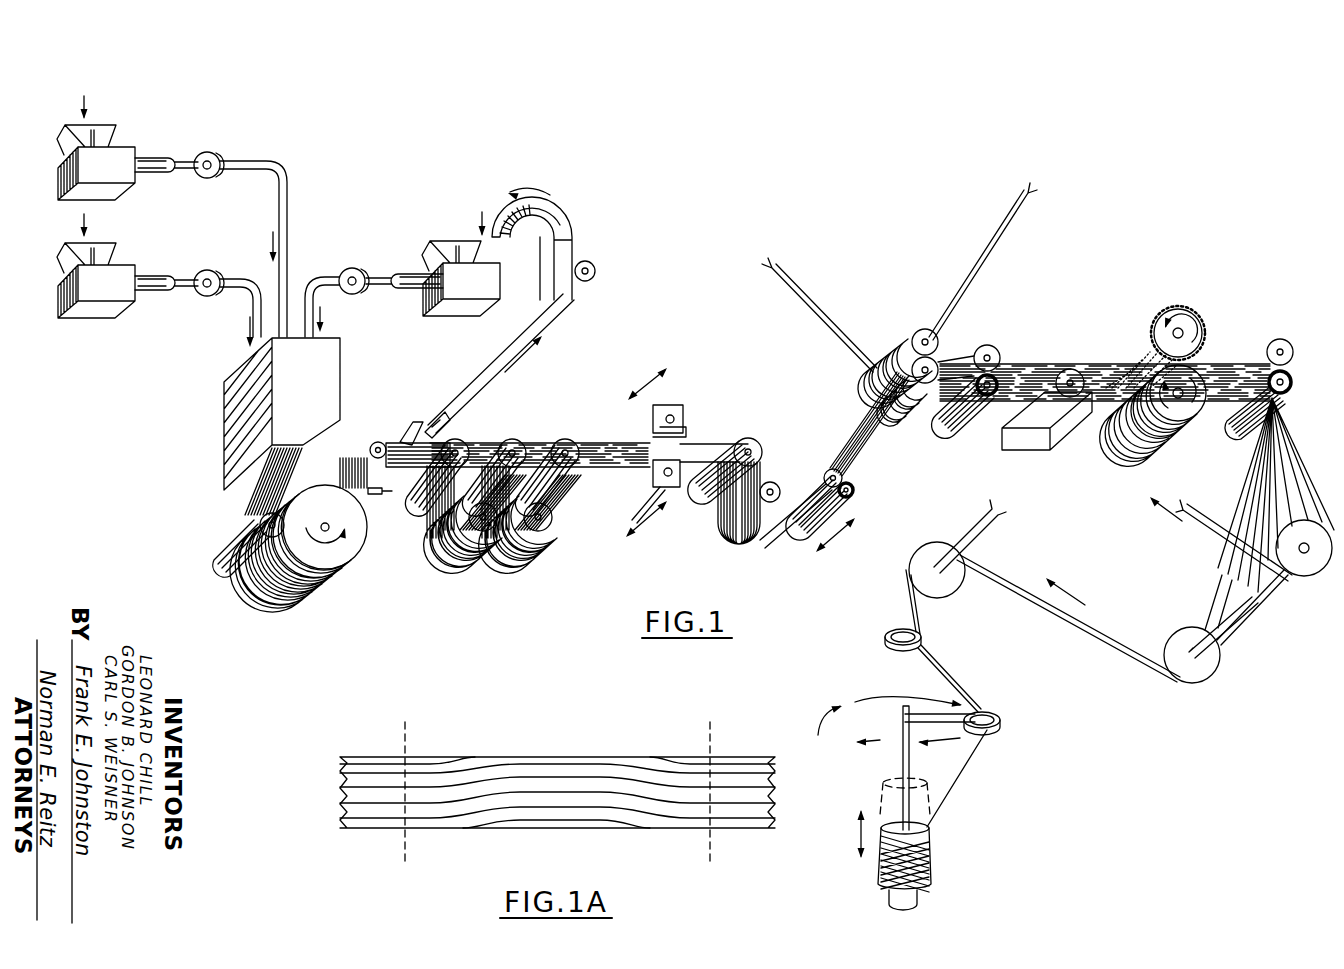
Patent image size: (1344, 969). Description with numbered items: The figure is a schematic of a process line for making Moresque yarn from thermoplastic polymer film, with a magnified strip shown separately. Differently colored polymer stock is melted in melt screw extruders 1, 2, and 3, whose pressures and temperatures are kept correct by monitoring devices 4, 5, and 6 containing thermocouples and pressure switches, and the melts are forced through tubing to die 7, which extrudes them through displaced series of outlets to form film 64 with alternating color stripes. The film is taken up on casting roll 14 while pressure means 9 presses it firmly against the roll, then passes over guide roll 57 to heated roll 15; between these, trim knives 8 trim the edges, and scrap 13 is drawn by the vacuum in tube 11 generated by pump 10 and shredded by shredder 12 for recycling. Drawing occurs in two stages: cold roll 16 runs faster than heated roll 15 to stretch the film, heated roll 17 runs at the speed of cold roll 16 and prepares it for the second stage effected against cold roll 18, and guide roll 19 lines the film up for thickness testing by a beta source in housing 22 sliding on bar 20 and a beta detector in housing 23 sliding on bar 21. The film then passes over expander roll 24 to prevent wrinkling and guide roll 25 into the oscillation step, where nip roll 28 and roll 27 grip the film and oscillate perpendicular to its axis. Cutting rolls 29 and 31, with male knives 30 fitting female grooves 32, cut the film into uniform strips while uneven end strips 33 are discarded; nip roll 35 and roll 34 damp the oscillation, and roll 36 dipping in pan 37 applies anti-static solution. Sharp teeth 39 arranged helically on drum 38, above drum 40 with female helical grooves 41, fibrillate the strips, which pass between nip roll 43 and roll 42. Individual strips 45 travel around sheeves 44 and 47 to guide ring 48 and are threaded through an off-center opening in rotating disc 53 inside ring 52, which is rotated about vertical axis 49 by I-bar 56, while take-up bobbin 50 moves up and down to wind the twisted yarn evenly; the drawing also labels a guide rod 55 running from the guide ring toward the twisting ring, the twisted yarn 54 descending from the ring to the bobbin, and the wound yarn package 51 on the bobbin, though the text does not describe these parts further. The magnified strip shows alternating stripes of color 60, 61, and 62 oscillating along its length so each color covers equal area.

In FIG. 1, the melt screw extruder 1 is at (127, 148).
In FIG. 1, the melt screw extruder 2 is at (127, 266).
In FIG. 1, the melt screw extruder 3 is at (433, 264).
In FIG. 1, the monitoring device 4 is at (213, 150).
In FIG. 1, the monitoring device 5 is at (213, 267).
In FIG. 1, the monitoring device 6 is at (354, 268).
In FIG. 1, the die 7 is at (282, 414).
In FIG. 1, the trim knives 8 is at (417, 437).
In FIG. 1, the pressure means 9 is at (222, 550).
In FIG. 1, the pump 10 is at (592, 261).
In FIG. 1, the tube 11 is at (463, 383).
In FIG. 1, the shredder 12 is at (560, 204).
In FIG. 1, the scrap 13 is at (427, 430).
In FIG. 1, the casting roll 14 is at (353, 545).
In FIG. 1, the heated roll 15 is at (467, 443).
In FIG. 1, the cold roll 16 is at (480, 527).
In FIG. 1, the heated roll 17 is at (517, 443).
In FIG. 1, the cold roll 18 is at (541, 522).
In FIG. 1, the guide roll 19 is at (567, 443).
In FIG. 1, the bar 20 is at (671, 410).
In FIG. 1, the bar 21 is at (637, 500).
In FIG. 1, the housing 22 is at (692, 427).
In FIG. 1, the housing 23 is at (700, 440).
In FIG. 1, the expander roll 24 is at (751, 440).
In FIG. 1, the guide roll 25 is at (773, 483).
In FIG. 1, the roll 27 is at (830, 470).
In FIG. 1, the nip roll 28 is at (853, 493).
In FIG. 1, the cutting roll 29 is at (930, 330).
In FIG. 1, the male knives 30 is at (900, 370).
In FIG. 1, the cutting roll 31 is at (919, 336).
In FIG. 1, the female grooves 32 is at (918, 398).
In FIG. 1, the uneven end strips 33 is at (807, 295).
In FIG. 1, the roll 34 is at (995, 343).
In FIG. 1, the nip roll 35 is at (985, 397).
In FIG. 1, the roll 36 is at (1070, 368).
In FIG. 1, the pan 37 is at (1070, 404).
In FIG. 1, the drum 38 is at (1190, 312).
In FIG. 1, the sharp teeth 39 is at (1152, 350).
In FIG. 1, the drum 40 is at (1192, 412).
In FIG. 1, the female helical grooves 41 is at (1118, 465).
In FIG. 1, the roll 42 is at (1281, 339).
In FIG. 1, the nip roll 43 is at (1292, 376).
In FIG. 1, the sheeves 44 is at (1312, 563).
In FIG. 1, the individual strip 45 is at (1098, 625).
In FIG. 1A, the individual strip 45 is at (547, 757).
In FIG. 1, the sheeve 47 is at (950, 577).
In FIG. 1, the guide ring 48 is at (890, 632).
In FIG. 1, the vertical axis 49 is at (900, 760).
In FIG. 1, the take-up bobbin 50 is at (917, 898).
In FIG. 1, the bobbin 51 is at (930, 853).
In FIG. 1, the ring 52 is at (1000, 715).
In FIG. 1, the rotating disc 53 is at (982, 715).
In FIG. 1, the yarn 54 is at (967, 768).
In FIG. 1, the guide rod 55 is at (955, 673).
In FIG. 1, the I-bar 56 is at (920, 713).
In FIG. 1, the guide roll 57 is at (379, 440).
In FIG. 1A, the stripe of color 60 is at (398, 800).
In FIG. 1A, the stripe of color 61 is at (530, 827).
In FIG. 1A, the stripe of color 62 is at (635, 773).
In FIG. 1, the film 64 is at (310, 470).